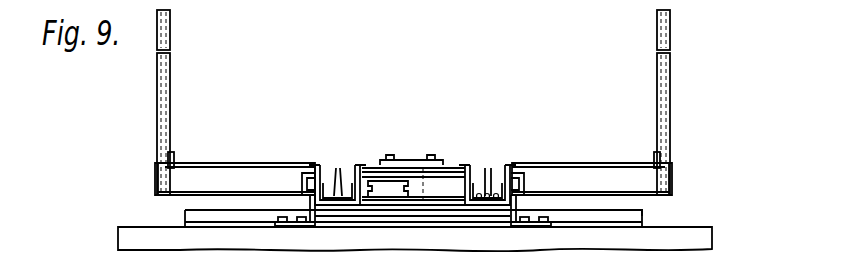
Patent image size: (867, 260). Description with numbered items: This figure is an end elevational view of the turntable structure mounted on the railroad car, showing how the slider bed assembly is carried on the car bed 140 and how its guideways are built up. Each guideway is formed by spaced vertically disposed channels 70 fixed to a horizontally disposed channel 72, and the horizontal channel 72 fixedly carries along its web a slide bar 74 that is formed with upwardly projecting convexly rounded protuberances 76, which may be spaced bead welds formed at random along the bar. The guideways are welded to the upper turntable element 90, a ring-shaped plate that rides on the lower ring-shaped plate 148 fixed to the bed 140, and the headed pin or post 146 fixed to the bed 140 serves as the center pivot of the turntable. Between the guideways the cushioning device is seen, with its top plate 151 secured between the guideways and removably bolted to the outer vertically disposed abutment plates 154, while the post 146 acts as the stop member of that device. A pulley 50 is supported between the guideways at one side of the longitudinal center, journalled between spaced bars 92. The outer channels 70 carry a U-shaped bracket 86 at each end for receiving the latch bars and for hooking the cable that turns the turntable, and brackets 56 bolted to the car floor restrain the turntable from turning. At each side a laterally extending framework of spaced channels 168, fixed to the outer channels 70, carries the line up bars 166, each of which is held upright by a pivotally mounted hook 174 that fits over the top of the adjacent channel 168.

The pulley 50 is at (398, 165).
The brackets 56 is at (292, 210).
The vertically disposed channels 70 is at (322, 164).
The horizontally disposed channel 72 is at (324, 207).
The slide bar 74 is at (490, 184).
The protuberances 76 is at (337, 166).
The U-shaped bracket 86 is at (303, 178).
The upper turntable element 90 is at (645, 216).
The spaced bars 92 is at (378, 181).
The bed 140 is at (714, 245).
The headed pin or post 146 is at (418, 163).
The lower ring-shaped plate 148 is at (576, 224).
The top plate 151 is at (448, 172).
The cushion device abutment plates 154 is at (448, 190).
The line up bars 166 is at (170, 78).
The channels 168 is at (207, 173).
The hook 174 is at (174, 160).